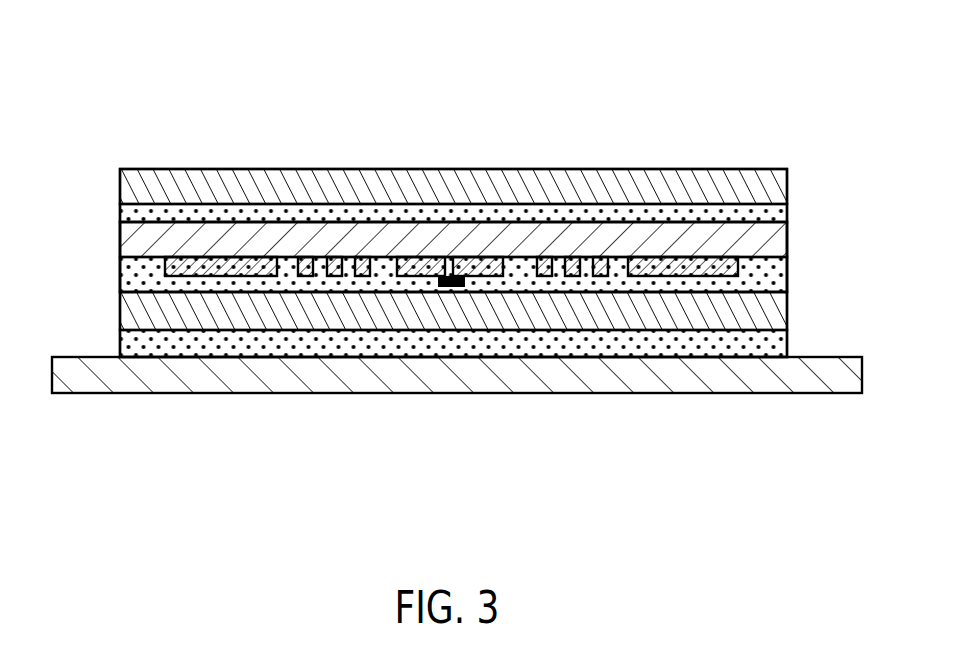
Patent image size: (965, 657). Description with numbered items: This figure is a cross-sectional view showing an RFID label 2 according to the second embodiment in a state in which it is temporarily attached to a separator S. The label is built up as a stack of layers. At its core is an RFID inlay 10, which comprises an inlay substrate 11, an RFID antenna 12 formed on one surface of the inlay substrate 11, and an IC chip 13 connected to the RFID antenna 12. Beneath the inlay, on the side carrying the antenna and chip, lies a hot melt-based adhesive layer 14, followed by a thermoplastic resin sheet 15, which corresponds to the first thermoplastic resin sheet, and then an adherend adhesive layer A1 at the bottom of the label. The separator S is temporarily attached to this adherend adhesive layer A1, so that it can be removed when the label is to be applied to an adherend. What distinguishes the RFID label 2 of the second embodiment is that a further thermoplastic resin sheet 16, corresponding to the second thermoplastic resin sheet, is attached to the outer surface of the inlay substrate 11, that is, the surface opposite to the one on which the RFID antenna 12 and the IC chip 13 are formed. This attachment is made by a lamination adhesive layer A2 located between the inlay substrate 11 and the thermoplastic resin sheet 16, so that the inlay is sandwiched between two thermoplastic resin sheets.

The RFID label 2 is at (647, 104).
The RFID inlay 10 is at (52, 200).
The inlay substrate 11 is at (128, 243).
The RFID antenna 12 is at (165, 267).
The IC chip 13 is at (440, 290).
The hot melt-based adhesive layer 14 is at (787, 286).
The thermoplastic resin sheet 15 is at (787, 318).
The thermoplastic resin sheet 16 is at (787, 180).
The adherend adhesive layer A1 is at (787, 347).
The lamination adhesive layer A2 is at (787, 213).
The separator S is at (858, 378).